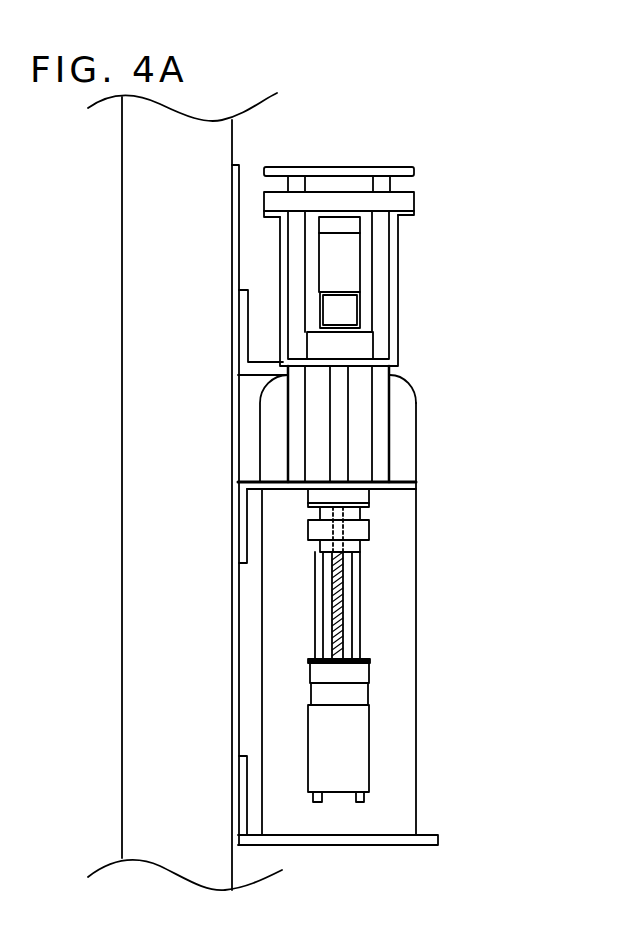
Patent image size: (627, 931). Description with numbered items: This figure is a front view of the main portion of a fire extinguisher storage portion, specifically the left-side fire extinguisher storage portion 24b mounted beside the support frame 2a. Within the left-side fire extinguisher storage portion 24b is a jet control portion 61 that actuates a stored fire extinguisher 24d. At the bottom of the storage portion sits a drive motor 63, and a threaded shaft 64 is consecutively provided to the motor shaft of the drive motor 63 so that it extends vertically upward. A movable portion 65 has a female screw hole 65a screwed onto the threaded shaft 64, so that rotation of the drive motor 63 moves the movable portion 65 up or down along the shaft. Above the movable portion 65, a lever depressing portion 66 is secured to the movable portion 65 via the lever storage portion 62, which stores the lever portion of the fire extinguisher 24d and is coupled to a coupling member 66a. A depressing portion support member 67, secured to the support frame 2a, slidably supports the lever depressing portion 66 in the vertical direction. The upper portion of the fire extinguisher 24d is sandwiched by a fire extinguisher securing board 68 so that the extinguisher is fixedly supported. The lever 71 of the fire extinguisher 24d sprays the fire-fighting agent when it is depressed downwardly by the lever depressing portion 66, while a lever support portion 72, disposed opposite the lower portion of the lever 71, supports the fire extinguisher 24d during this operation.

The support frame 2a is at (163, 667).
The left-side fire extinguisher storage portion 24b is at (425, 805).
The fire extinguisher 24d is at (402, 465).
The jet control portion 61 is at (415, 474).
The lever storage portion 62 is at (400, 272).
The drive motor 63 is at (342, 743).
The threaded shaft 64 is at (343, 632).
The movable portion 65 is at (355, 529).
The female screw hole 65a is at (342, 545).
The lever depressing portion 66 is at (398, 203).
The coupling member 66a is at (338, 395).
The depressing portion support member 67 is at (382, 245).
The fire extinguisher securing board 68 is at (257, 369).
The lever 71 is at (334, 224).
The lever support portion 72 is at (342, 312).